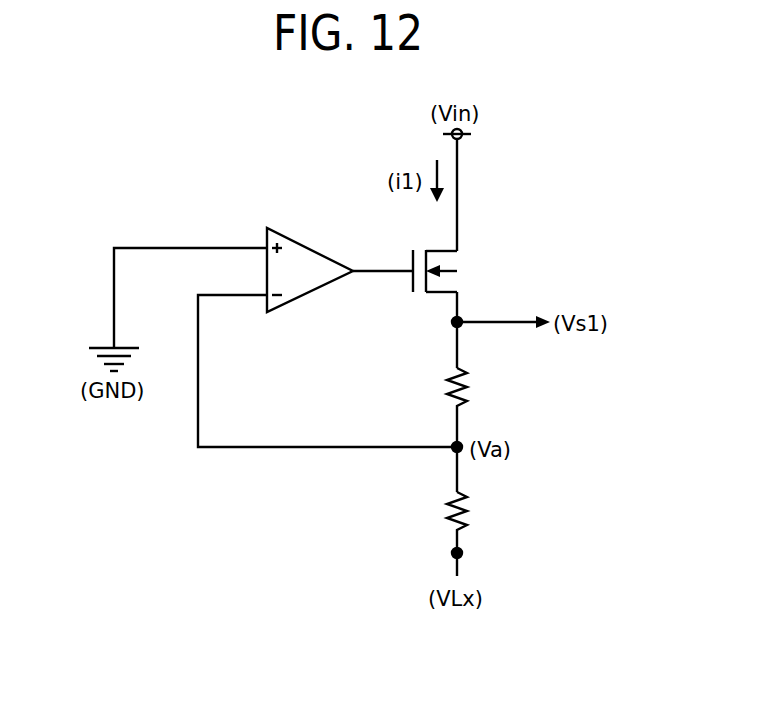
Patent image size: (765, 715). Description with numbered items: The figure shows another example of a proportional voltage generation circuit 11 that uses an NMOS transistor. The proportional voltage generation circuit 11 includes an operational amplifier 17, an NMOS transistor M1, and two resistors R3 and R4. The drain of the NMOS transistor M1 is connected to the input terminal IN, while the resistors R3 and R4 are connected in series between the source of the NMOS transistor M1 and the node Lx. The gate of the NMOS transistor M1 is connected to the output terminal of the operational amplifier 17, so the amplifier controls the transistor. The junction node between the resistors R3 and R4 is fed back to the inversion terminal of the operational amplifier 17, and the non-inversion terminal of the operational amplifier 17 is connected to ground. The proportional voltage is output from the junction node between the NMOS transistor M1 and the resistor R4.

The proportional voltage generation circuit 11 is at (531, 162).
The operational amplifier 17 is at (298, 233).
The NMOS transistor M1 is at (435, 256).
The resistor R3 is at (477, 513).
The resistor R4 is at (477, 390).
The input terminal IN is at (458, 145).
The node Lx is at (462, 553).